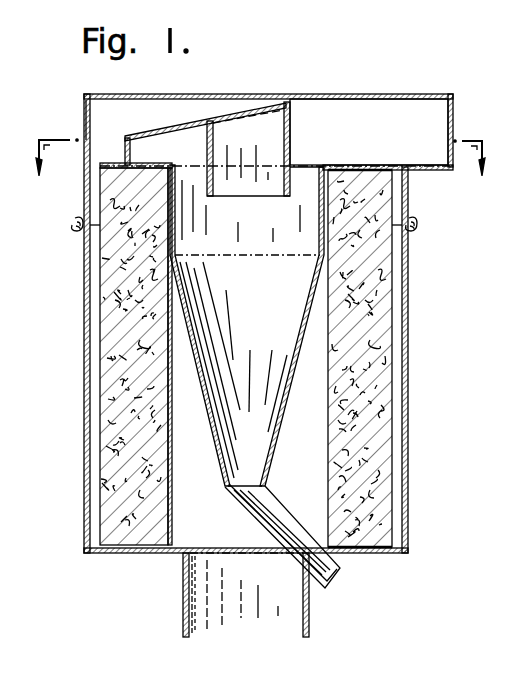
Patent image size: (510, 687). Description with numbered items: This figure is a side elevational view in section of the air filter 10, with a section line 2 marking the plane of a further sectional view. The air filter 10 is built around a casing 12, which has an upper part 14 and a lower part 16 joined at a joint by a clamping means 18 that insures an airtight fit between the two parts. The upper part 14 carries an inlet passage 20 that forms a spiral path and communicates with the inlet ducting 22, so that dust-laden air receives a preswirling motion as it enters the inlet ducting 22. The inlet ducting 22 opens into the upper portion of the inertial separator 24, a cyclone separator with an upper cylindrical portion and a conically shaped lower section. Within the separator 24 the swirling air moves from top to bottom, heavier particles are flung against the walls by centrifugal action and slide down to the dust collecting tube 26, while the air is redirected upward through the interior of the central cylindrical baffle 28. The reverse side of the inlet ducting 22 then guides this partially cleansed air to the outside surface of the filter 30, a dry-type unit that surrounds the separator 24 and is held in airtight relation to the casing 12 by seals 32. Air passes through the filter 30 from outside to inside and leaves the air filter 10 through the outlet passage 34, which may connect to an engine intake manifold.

The air filter 10 is at (352, 93).
The casing 12 is at (406, 288).
The upper part 14 is at (84, 121).
The lower part 16 is at (78, 350).
The clamping means 18 is at (78, 230).
The inlet passage 20 is at (430, 119).
The inlet ducting 22 is at (177, 136).
The inertial separator 24 is at (318, 300).
The dust collecting tube 26 is at (332, 580).
The central cylindrical baffle 28 is at (280, 192).
The filter 30 is at (380, 440).
The seals 32 is at (390, 172).
The outlet passage 34 is at (267, 620).
The section line 2- 2 is at (260, 168).